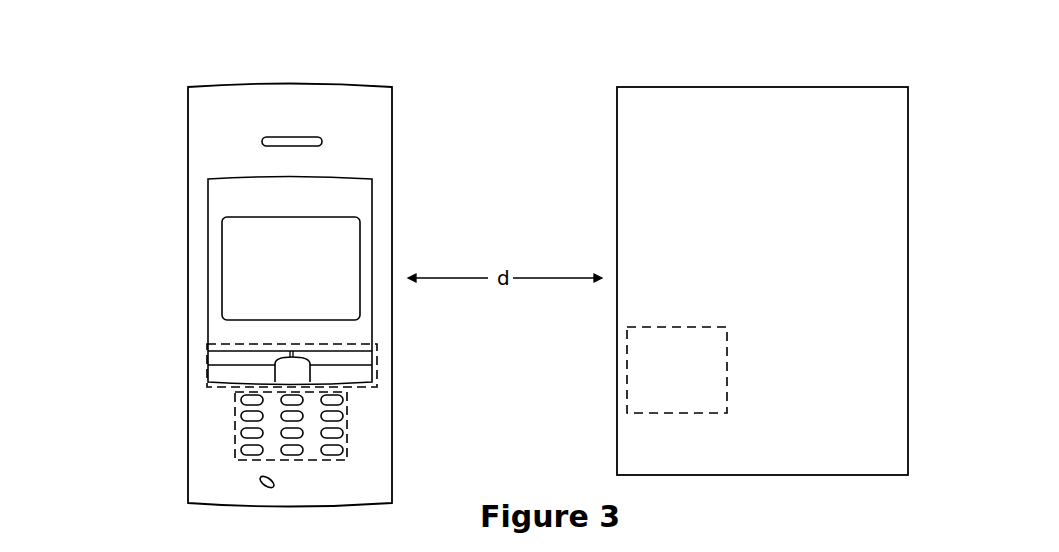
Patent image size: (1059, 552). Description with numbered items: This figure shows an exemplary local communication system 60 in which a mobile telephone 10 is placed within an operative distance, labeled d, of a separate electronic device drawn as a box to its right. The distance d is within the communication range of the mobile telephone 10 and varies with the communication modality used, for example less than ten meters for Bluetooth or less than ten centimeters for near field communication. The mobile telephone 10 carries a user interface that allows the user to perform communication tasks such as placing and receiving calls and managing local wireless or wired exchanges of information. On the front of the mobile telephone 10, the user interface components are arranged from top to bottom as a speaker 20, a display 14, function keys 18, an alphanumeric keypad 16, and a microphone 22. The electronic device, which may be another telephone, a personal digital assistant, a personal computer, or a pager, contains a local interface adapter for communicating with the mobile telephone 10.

The mobile telephone 10 is at (188, 141).
The display 14 is at (291, 268).
The alphanumeric keypad 16 is at (229, 425).
The function keys 18 is at (226, 364).
The speaker 20 is at (302, 133).
The microphone 22 is at (280, 486).
The communication system 60 is at (501, 84).